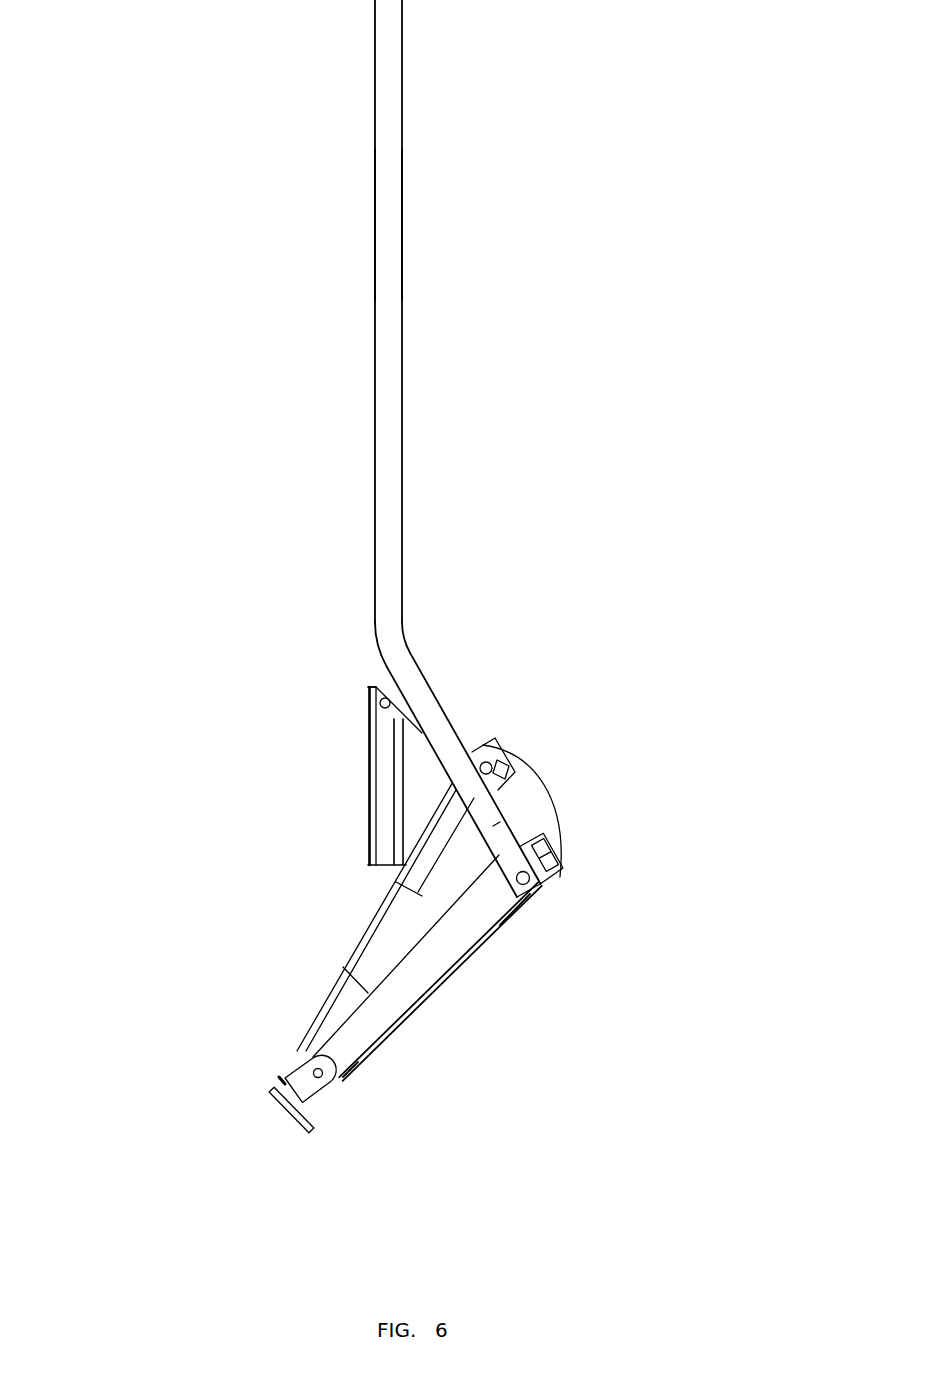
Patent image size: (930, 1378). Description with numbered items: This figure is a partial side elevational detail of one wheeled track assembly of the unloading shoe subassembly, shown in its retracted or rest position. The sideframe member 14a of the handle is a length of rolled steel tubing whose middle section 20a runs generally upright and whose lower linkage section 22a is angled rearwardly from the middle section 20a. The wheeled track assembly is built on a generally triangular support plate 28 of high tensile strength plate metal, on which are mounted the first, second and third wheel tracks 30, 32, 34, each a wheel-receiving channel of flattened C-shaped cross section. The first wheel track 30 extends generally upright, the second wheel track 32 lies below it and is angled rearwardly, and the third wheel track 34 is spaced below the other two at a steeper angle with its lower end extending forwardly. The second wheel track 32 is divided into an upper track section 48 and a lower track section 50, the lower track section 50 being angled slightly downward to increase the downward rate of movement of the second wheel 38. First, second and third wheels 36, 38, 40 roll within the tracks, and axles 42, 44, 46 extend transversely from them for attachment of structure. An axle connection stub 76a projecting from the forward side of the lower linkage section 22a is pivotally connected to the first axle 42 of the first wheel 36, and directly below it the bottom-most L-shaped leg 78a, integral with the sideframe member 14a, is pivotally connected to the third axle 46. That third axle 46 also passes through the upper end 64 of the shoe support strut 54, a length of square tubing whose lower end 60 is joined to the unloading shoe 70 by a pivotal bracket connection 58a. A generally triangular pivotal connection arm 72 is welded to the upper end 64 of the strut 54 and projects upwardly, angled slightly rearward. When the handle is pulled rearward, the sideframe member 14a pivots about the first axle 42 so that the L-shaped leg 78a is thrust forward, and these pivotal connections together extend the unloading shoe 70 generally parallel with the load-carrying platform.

The sideframe member 14a is at (397, 388).
The middle section 20a is at (390, 252).
The support plate 28 is at (430, 760).
The lower linkage section 22a is at (445, 720).
The third wheel 40 is at (563, 866).
The third wheel track 34 is at (557, 852).
The second wheel 38 is at (483, 752).
The second axle 44 is at (500, 772).
The axle connection stub 76a is at (371, 679).
The first wheel 36 is at (382, 723).
The first axle 42 is at (370, 703).
The first wheel track 30 is at (385, 814).
The upper track section 48 is at (430, 858).
The second wheel track 32 is at (382, 937).
The lower track section 50 is at (350, 966).
The shoe support strut 54 is at (400, 1023).
The upper end 64 is at (518, 912).
The pivotal connection arm 72 is at (466, 818).
The rod pivot end 60 is at (339, 1080).
The pivotal bracket connection 58a is at (310, 1095).
The unloading shoe 70 is at (282, 1110).
The third axle 46 is at (538, 878).
The L-shaped leg 78a is at (493, 826).